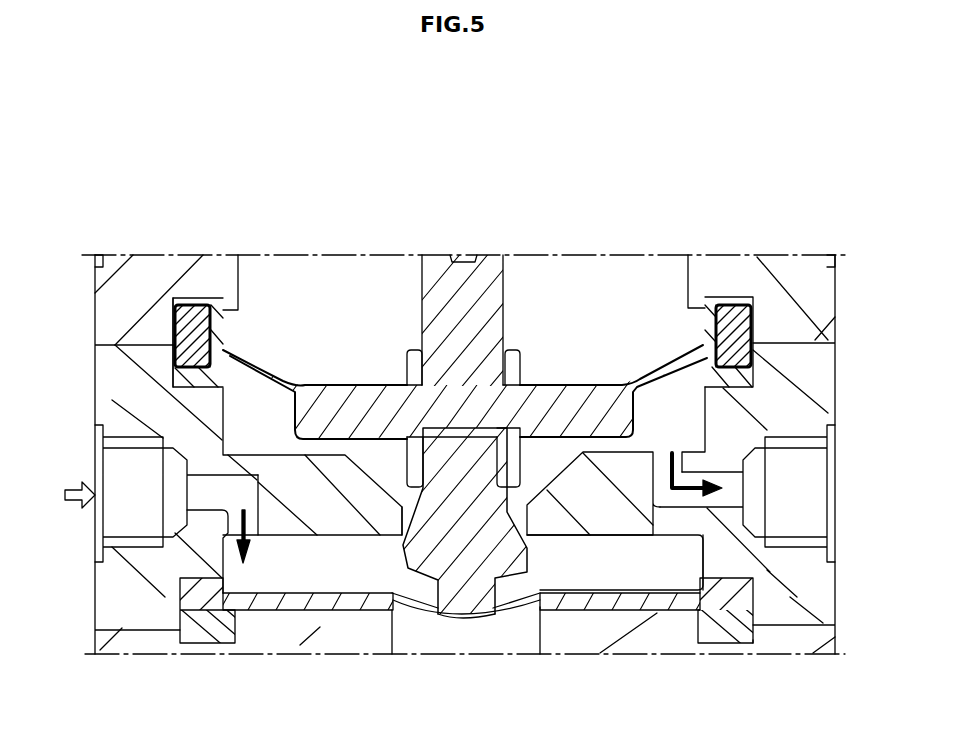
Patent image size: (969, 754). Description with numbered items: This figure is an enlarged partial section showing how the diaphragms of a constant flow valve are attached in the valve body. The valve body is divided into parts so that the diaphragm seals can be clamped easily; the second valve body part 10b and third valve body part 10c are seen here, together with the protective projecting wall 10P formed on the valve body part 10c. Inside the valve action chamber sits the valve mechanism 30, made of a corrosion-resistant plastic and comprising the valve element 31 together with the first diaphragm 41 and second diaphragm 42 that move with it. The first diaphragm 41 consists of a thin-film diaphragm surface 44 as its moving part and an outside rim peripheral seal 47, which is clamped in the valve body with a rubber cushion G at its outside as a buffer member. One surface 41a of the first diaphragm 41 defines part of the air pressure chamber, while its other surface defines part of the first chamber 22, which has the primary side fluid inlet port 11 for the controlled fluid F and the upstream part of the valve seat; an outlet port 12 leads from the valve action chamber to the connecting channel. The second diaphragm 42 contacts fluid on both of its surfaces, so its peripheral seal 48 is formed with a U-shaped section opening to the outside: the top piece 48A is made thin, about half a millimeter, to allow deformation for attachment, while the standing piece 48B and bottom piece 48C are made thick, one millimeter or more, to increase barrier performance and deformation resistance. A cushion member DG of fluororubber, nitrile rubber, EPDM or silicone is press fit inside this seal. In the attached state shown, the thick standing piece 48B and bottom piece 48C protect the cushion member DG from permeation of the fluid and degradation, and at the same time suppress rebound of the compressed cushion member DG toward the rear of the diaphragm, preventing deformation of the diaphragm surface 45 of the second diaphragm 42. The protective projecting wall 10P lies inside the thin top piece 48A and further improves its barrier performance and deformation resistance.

The second valve body part 10b is at (117, 375).
The third valve body part 10c is at (123, 317).
The protective projecting wall 10P is at (233, 303).
The primary side fluid inlet port 11 is at (123, 465).
The outlet port 12 is at (810, 480).
The first chamber 22 is at (680, 557).
The valve mechanism 30 is at (350, 387).
The valve element 31 is at (410, 568).
The first diaphragm 41 is at (432, 612).
The one surface of the first diaphragm 41a is at (463, 615).
The second diaphragm 42 is at (567, 387).
The diaphragm surface 44 is at (493, 612).
The diaphragm surface 45 is at (258, 368).
The peripheral seal 47 is at (190, 602).
The peripheral seal 48 is at (713, 297).
The top piece 48A is at (188, 300).
The standing piece 48B is at (213, 320).
The bottom piece 48C is at (200, 380).
The cushion member DG is at (212, 352).
The controlled fluid F is at (67, 498).
The rubber cushion G is at (750, 638).